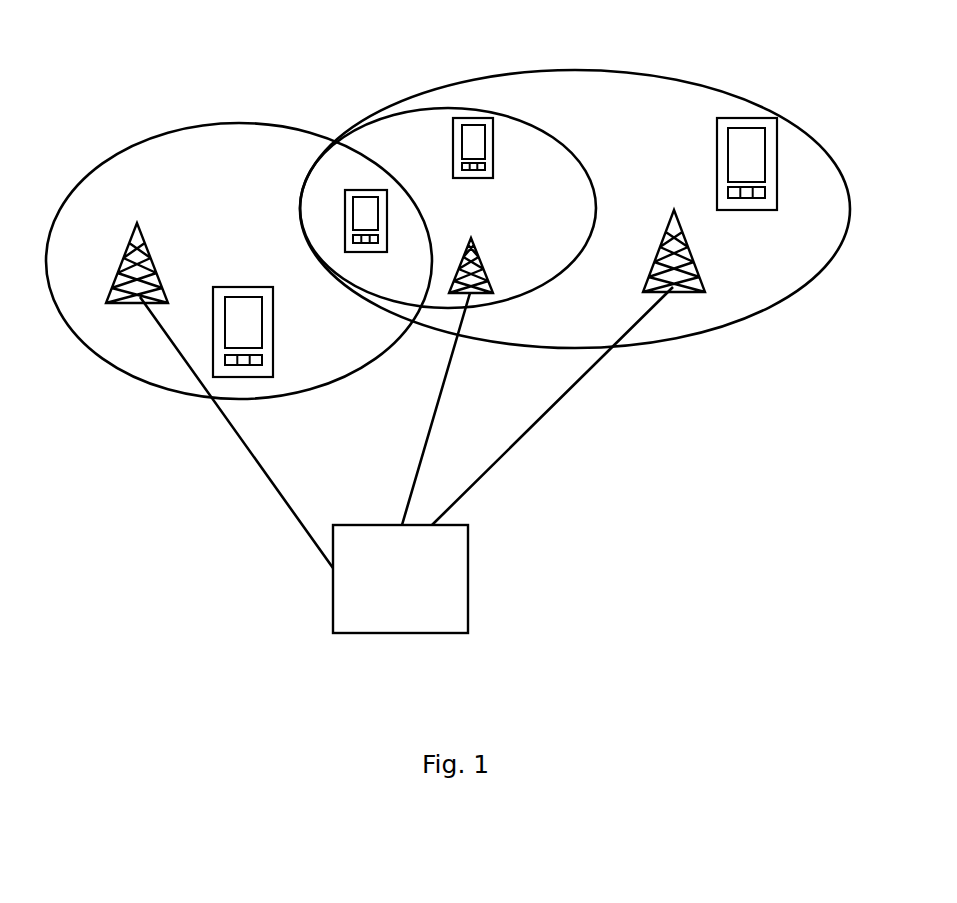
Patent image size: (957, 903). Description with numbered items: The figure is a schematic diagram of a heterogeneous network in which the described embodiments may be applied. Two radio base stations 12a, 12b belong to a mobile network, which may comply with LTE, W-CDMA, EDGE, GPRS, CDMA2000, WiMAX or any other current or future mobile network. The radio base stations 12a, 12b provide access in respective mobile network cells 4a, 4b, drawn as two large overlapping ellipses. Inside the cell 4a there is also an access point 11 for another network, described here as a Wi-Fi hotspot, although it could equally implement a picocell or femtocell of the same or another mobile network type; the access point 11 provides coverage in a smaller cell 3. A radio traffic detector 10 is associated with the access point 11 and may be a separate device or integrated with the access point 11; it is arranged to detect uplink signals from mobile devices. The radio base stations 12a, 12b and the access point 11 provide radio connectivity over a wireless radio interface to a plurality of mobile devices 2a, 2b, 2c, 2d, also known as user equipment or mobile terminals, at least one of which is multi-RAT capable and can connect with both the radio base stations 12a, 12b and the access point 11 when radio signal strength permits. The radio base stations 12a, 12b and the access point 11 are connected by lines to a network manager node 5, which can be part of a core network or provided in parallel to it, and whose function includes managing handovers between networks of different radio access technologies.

The mobile network cell 4a is at (602, 72).
The mobile network cell 4b is at (218, 123).
The smaller cell 3 is at (563, 277).
The mobile device 2a is at (493, 157).
The mobile device 2b is at (367, 252).
The mobile device 2c is at (717, 145).
The mobile device 2d is at (273, 330).
The radio traffic detector 10 is at (468, 250).
The access point 11 is at (479, 264).
The radio base station 12a is at (658, 257).
The radio base station 12b is at (150, 247).
The network manager node 5 is at (406, 460).